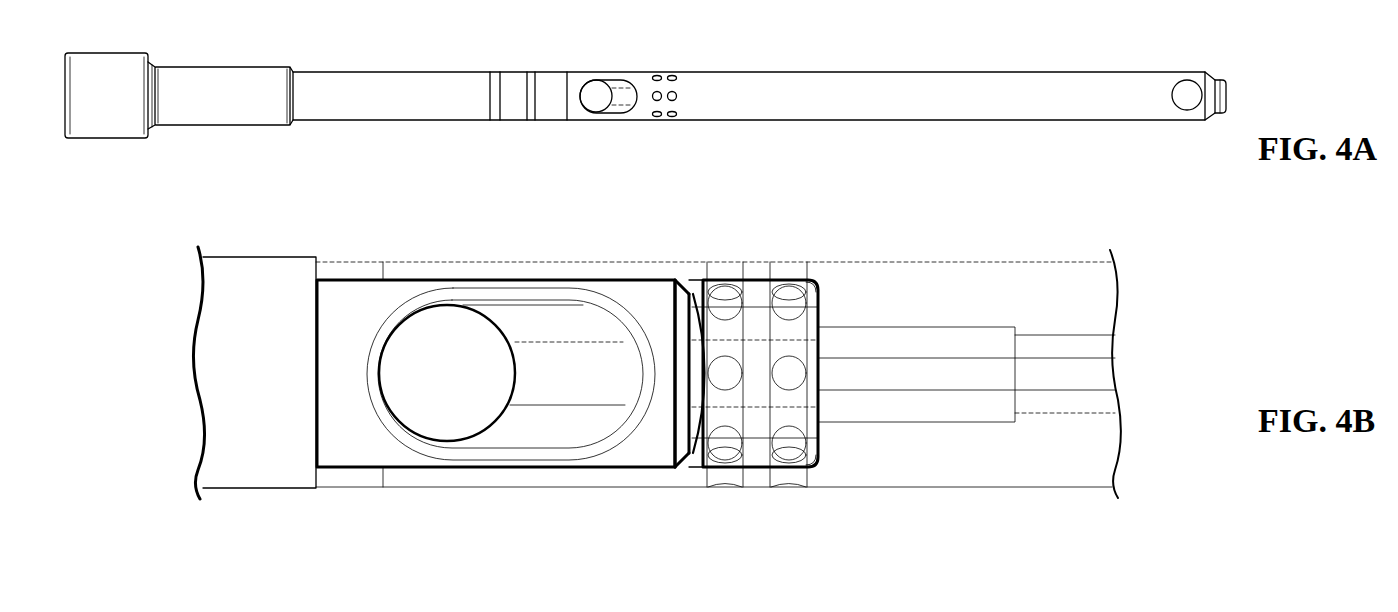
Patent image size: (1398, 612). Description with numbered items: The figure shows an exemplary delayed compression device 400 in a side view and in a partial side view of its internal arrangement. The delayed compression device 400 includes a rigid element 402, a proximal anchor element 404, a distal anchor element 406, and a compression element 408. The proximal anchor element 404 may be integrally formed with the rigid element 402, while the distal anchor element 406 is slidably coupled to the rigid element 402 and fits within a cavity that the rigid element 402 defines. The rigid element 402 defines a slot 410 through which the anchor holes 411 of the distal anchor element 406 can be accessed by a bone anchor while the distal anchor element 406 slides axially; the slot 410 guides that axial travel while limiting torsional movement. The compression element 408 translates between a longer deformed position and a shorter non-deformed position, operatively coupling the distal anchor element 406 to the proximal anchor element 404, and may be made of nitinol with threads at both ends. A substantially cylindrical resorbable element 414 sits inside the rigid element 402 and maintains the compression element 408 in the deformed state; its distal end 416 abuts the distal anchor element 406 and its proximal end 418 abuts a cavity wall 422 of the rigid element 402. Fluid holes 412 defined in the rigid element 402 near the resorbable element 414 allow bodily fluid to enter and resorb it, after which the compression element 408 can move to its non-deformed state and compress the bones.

In FIG. 4A, the delayed compression device 400 is at (1098, 43).
In FIG. 4B, the delayed compression device 400 is at (973, 227).
In FIG. 4A, the rigid element 402 is at (868, 96).
In FIG. 4A, the proximal anchor element 404 is at (1117, 126).
In FIG. 4B, the distal anchor element 406 is at (352, 308).
In FIG. 4B, the compression element 408 is at (1040, 373).
In FIG. 4A, the slot 410 is at (620, 103).
In FIG. 4B, the slot 410 is at (577, 404).
In FIG. 4B, the anchor holes 411 is at (436, 388).
In FIG. 4A, the fluid holes 412 is at (672, 121).
In FIG. 4B, the fluid holes 412 is at (789, 288).
In FIG. 4B, the resorbable element 414 is at (757, 326).
In FIG. 4B, the distal end 416 is at (686, 326).
In FIG. 4B, the proximal end 418 is at (823, 402).
In FIG. 4B, the cavity wall 422 is at (824, 306).